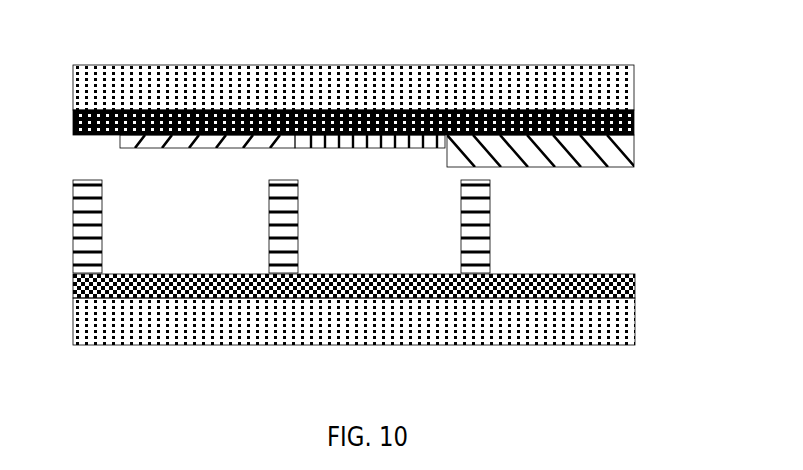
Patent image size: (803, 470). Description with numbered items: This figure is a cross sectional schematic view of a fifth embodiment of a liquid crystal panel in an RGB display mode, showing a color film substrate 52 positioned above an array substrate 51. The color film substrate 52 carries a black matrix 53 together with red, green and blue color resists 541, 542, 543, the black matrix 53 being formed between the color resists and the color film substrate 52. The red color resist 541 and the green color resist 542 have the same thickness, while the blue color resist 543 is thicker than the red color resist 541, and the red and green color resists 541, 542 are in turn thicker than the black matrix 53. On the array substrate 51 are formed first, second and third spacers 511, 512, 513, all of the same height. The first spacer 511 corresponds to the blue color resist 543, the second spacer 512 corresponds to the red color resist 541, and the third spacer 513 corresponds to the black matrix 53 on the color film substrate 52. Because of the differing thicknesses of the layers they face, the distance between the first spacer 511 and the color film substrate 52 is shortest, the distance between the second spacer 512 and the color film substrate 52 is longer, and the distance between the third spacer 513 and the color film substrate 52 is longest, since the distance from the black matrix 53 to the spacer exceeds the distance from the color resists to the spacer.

The array substrate 51 is at (620, 345).
The first spacer 511 is at (491, 226).
The second spacer 512 is at (299, 222).
The third spacer 513 is at (103, 222).
The color film substrate 52 is at (619, 65).
The black matrix 53 is at (634, 118).
The red color resist 541 is at (120, 143).
The green color resist 542 is at (400, 143).
The blue color resist 543 is at (634, 150).